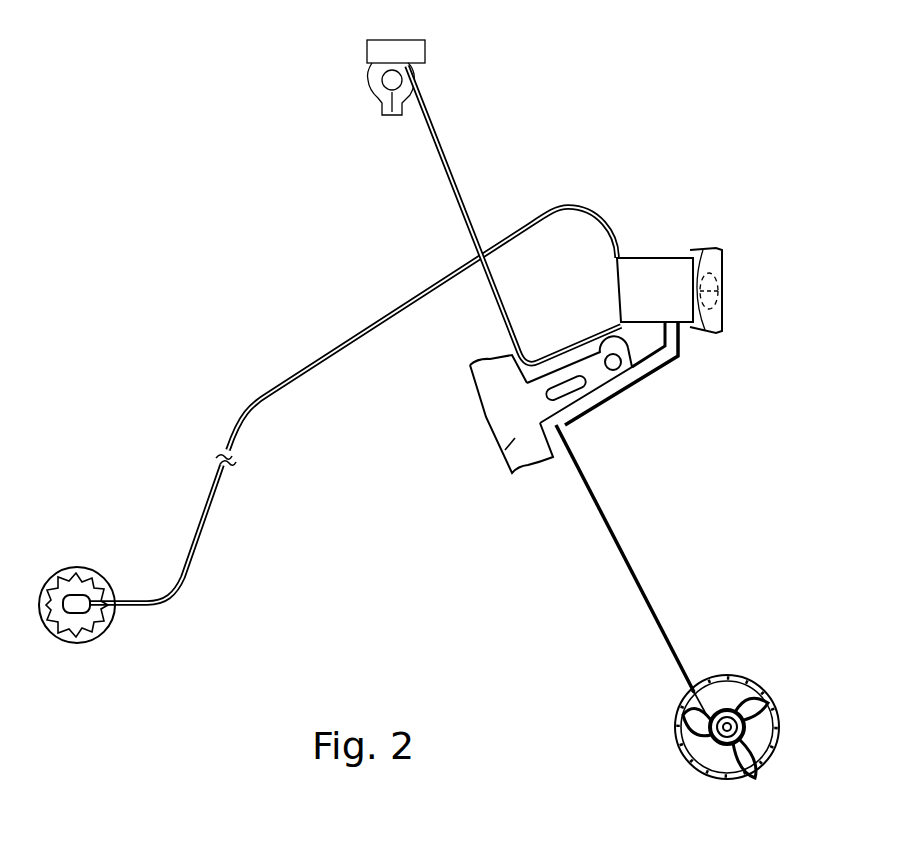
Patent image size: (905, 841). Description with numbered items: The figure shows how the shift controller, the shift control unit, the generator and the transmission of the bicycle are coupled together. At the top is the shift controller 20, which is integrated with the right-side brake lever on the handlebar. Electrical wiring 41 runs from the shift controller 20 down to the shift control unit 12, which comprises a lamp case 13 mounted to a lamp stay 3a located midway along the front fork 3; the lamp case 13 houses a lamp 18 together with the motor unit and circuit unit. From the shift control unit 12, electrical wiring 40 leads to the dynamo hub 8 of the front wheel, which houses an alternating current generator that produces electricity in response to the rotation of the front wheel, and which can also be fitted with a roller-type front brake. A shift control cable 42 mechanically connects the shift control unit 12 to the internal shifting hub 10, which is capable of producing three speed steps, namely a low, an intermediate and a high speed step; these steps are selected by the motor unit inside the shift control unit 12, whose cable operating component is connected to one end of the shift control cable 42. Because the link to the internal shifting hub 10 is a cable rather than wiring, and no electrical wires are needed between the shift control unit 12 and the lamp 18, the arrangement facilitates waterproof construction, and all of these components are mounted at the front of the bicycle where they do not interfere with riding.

The front fork 3 is at (508, 445).
The lamp stay 3a is at (560, 430).
The dynamo hub 8 is at (732, 673).
The internal shifting hub 10 is at (102, 633).
The shift control unit 12 is at (636, 256).
The lamp case 13 is at (657, 268).
The lamp 18 is at (723, 265).
The shift controller 20 is at (415, 53).
The electrical wiring 40 is at (630, 558).
The electrical wiring 41 is at (460, 160).
The shift control cable 42 is at (397, 312).